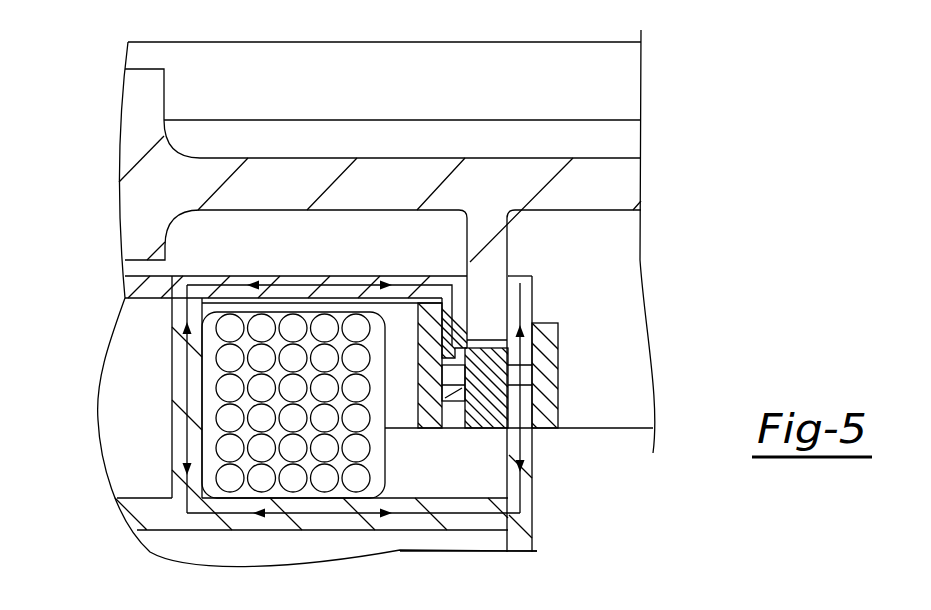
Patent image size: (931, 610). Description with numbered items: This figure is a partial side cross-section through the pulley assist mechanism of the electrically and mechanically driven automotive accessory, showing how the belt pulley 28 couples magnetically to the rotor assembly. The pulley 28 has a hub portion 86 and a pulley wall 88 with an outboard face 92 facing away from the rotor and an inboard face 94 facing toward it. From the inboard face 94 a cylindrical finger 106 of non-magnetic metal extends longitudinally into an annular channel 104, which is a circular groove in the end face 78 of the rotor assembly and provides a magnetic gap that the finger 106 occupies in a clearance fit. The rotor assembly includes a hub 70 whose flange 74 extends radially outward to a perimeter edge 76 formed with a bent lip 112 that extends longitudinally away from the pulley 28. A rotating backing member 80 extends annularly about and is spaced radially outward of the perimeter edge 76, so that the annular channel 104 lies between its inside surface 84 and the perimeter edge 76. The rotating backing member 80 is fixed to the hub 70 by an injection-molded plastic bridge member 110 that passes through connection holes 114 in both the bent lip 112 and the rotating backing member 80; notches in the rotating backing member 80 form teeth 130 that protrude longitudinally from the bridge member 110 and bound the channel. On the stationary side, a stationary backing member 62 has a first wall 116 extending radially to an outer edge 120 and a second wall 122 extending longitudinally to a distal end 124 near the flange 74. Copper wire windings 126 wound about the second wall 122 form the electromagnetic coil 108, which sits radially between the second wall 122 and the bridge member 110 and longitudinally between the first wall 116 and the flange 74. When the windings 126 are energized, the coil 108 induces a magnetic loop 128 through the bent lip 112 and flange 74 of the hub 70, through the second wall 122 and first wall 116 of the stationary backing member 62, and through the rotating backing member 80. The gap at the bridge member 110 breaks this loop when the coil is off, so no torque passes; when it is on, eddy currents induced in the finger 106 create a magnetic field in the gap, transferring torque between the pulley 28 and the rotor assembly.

The pulley 28 is at (607, 183).
The stationary backing member 62 is at (132, 493).
The hub 70 is at (145, 299).
The flange 74 is at (303, 278).
The perimeter edge 76 is at (483, 343).
The end face 78 is at (260, 277).
The rotating backing member 80 is at (527, 495).
The inside surface 84 is at (507, 485).
The hub portion 86 is at (147, 97).
The pulley wall 88 is at (271, 182).
The outboard face 92 is at (587, 153).
The inboard face 94 is at (587, 213).
The annular channel 104 is at (470, 311).
The finger 106 is at (483, 272).
The electromagnetic coil 108 is at (208, 492).
The bridge member 110 is at (497, 367).
The bent lip 112 is at (448, 350).
The connection holes 114 is at (457, 403).
The first wall 116 is at (238, 525).
The outer edge 120 is at (510, 527).
The second wall 122 is at (177, 377).
The distal end 124 is at (170, 292).
The windings 126 is at (293, 423).
The magnetic loop 128 is at (453, 517).
The teeth 130 is at (517, 280).